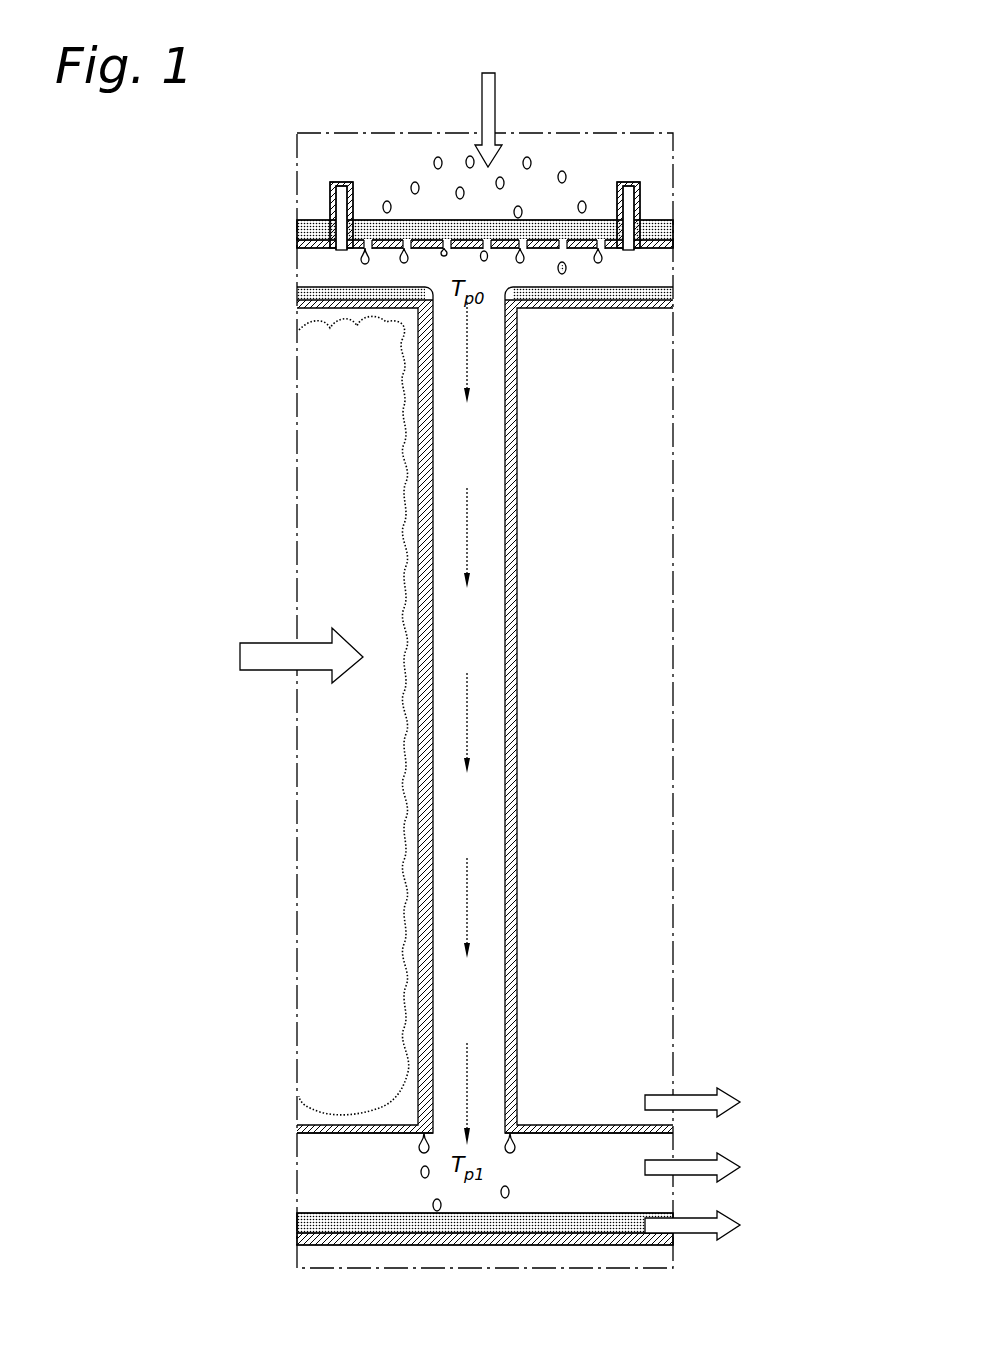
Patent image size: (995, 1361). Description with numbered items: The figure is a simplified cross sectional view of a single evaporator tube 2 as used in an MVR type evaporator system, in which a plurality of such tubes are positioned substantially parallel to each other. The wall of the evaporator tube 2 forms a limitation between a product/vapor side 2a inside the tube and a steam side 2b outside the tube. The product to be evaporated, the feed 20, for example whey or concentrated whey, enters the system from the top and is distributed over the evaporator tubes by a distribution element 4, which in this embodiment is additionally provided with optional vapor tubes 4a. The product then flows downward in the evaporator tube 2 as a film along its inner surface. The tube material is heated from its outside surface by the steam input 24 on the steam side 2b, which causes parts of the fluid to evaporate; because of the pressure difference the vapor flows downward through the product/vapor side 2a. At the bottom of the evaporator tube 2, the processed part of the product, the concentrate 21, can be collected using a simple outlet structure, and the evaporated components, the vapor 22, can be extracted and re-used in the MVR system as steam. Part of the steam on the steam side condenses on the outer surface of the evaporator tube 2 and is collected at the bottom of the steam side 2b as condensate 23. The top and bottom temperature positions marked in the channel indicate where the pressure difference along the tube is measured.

The evaporator tube 2 is at (513, 489).
The product/vapor side 2a is at (448, 564).
The steam side 2b is at (356, 437).
The distribution element 4 is at (662, 249).
The vapor tubes 4a is at (632, 196).
The feed 20 is at (488, 80).
The concentrate 21 is at (690, 1224).
The vapor 22 is at (725, 1173).
The condensate 23 is at (703, 1102).
The steam input 24 is at (257, 658).